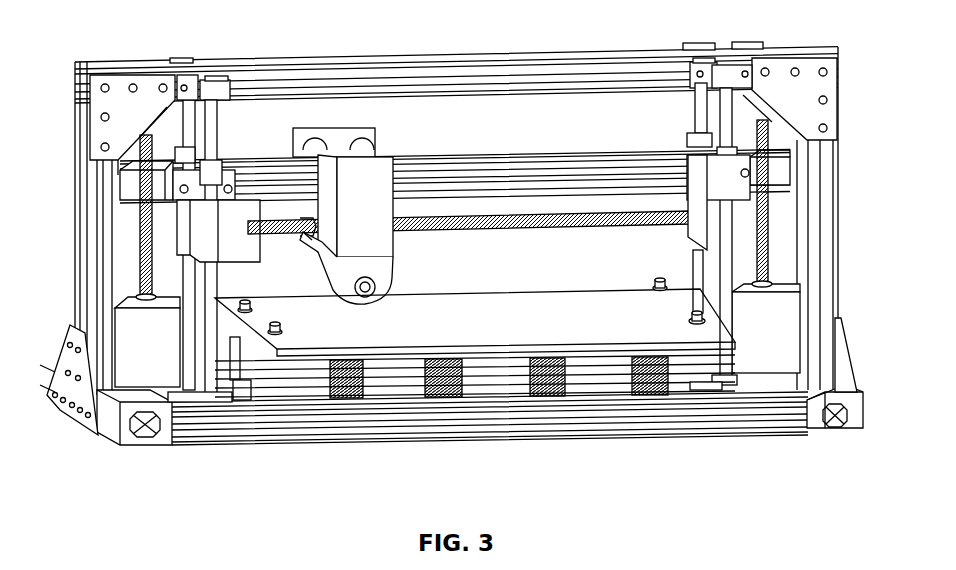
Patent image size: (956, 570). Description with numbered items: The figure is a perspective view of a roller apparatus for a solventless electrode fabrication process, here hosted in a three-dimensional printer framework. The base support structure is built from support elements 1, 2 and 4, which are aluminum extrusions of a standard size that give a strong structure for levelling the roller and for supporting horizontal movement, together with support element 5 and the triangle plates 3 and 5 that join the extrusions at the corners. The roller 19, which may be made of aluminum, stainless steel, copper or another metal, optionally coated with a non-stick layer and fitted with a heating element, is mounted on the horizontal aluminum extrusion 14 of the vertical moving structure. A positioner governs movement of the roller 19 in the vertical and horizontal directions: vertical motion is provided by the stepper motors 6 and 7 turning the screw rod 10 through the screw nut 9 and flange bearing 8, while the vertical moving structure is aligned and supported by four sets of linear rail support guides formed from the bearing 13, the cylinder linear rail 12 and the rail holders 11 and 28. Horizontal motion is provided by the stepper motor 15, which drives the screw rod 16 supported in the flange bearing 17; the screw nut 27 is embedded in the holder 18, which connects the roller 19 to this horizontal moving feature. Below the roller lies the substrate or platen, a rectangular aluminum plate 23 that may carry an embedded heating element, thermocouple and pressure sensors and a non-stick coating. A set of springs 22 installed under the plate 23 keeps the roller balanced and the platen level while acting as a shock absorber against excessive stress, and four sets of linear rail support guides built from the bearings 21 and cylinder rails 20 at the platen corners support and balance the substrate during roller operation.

The support element 1 is at (82, 170).
The support element 2 is at (252, 72).
The triangle plate 3 is at (118, 82).
The support element 4 is at (113, 440).
The triangle plate 5 is at (67, 357).
The stepper motor 6 is at (128, 330).
The stepper motor 7 is at (785, 330).
The flange bearing 8 is at (765, 108).
The screw nut 9 is at (780, 165).
The screw rod 10 is at (813, 198).
The rail holder 11 is at (723, 78).
The cylinder linear rail 12 is at (213, 140).
The bearing 13 is at (212, 178).
The horizontal aluminum extrusion 14 is at (442, 173).
The stepper motor 15 is at (228, 240).
The screw rod 16 is at (547, 223).
The flange bearing 17 is at (710, 221).
The holder 18 is at (368, 178).
The roller 19 is at (330, 270).
The cylinder rail 20 is at (660, 283).
The bearing 21 is at (658, 306).
The spring 22 is at (548, 363).
The rectangular aluminum plate 23 is at (462, 326).
The screw nut 27 is at (312, 233).
The rail holder 28 is at (750, 377).